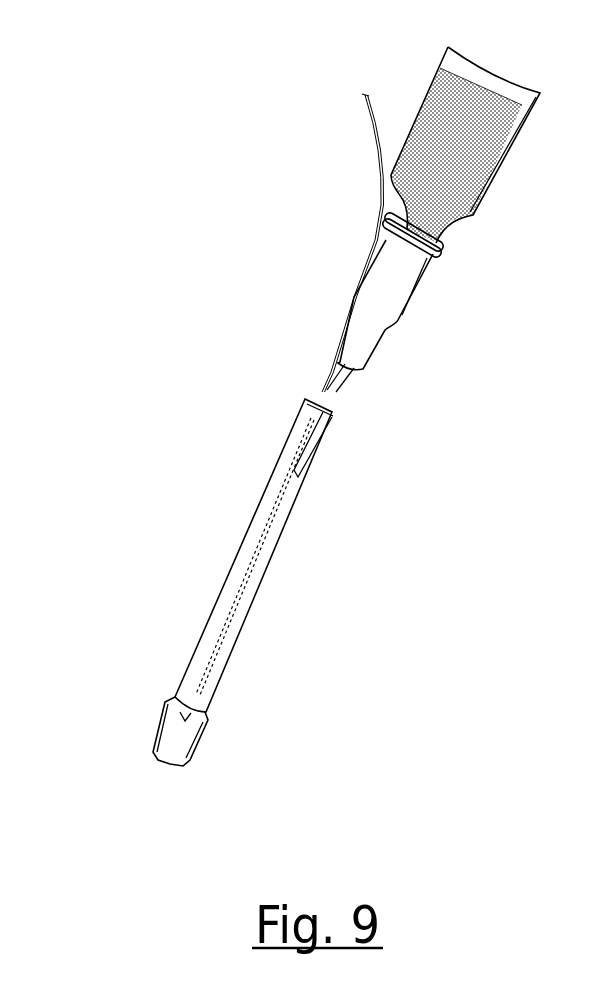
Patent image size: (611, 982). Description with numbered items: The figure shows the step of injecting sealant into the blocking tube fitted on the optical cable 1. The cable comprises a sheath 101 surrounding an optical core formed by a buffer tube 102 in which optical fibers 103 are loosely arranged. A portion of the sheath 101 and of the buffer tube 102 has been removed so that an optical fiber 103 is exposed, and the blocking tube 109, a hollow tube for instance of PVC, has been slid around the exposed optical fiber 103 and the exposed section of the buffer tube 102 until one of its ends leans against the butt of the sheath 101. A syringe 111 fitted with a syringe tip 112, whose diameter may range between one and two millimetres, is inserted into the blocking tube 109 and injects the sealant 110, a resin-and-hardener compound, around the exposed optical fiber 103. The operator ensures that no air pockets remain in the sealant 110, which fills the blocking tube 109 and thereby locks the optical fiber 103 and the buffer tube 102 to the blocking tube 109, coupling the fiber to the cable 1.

The optical cable 1 is at (203, 529).
The sheath 101 is at (155, 737).
The buffer tube 102 is at (210, 670).
The optical fiber 103 is at (375, 125).
The blocking tube 109 is at (272, 557).
The sealant 110 is at (457, 188).
The syringe 111 is at (435, 273).
The syringe tip 112 is at (353, 387).